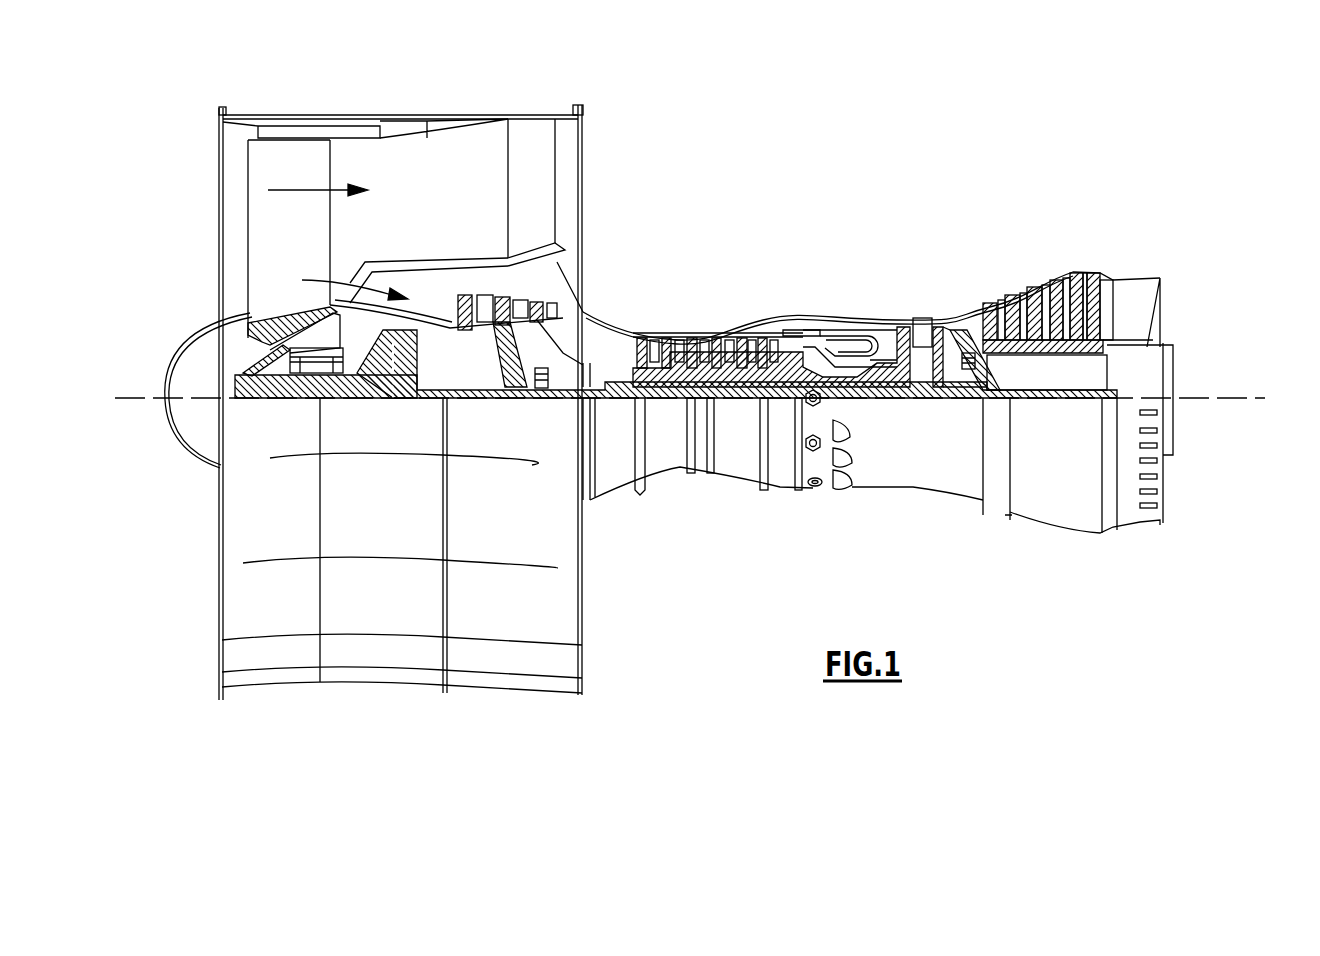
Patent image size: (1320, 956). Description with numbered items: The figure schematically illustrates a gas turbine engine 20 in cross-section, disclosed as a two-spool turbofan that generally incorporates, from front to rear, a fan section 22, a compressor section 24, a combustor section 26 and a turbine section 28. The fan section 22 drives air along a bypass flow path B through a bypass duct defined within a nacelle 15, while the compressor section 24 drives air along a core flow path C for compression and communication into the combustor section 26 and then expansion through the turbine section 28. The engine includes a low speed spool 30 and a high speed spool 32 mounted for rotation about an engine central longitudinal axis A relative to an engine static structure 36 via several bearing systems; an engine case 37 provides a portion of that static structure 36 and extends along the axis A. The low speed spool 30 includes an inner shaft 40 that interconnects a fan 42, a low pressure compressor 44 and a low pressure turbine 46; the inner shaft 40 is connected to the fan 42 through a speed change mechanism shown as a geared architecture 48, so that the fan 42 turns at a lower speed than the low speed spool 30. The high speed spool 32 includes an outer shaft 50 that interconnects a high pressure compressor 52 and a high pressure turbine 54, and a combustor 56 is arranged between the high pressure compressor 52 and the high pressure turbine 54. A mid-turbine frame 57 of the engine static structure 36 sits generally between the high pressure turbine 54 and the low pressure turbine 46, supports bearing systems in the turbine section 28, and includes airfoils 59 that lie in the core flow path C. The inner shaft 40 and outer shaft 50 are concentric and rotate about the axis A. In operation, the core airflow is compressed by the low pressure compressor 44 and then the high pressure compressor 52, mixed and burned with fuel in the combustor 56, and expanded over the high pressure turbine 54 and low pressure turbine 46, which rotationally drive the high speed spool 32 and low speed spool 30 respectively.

The nacelle 15 is at (400, 118).
The gas turbine engine 20 is at (868, 160).
The fan section 22 is at (330, 102).
The compressor section 24 is at (638, 300).
The combustor section 26 is at (856, 290).
The turbine section 28 is at (1008, 250).
The low speed spool 30 is at (740, 415).
The high speed spool 32 is at (783, 352).
The engine static structure 36 is at (779, 503).
The engine case 37 is at (946, 512).
The inner shaft 40 is at (610, 415).
The fan 42 is at (304, 243).
The low pressure compressor 44 is at (503, 310).
The low pressure turbine 46 is at (1048, 284).
The geared architecture 48 is at (405, 384).
The outer shaft 50 is at (870, 388).
The high pressure compressor 52 is at (712, 357).
The high pressure turbine 54 is at (921, 318).
The combustor 56 is at (855, 338).
The mid-turbine frame 57 is at (967, 300).
The airfoils 59 is at (992, 372).
The engine central longitudinal axis A is at (1255, 397).
The bypass flow path B is at (303, 187).
The core flow path C is at (345, 283).